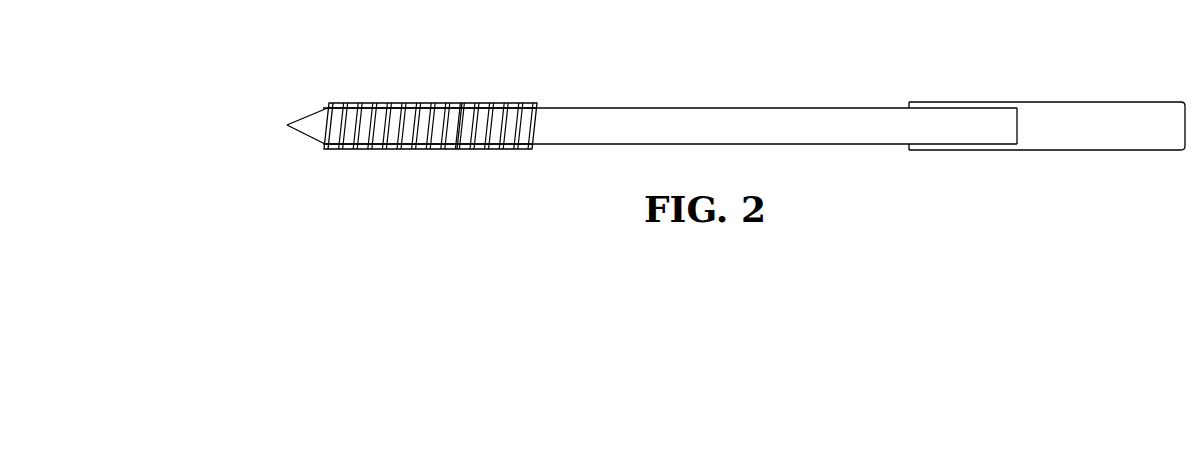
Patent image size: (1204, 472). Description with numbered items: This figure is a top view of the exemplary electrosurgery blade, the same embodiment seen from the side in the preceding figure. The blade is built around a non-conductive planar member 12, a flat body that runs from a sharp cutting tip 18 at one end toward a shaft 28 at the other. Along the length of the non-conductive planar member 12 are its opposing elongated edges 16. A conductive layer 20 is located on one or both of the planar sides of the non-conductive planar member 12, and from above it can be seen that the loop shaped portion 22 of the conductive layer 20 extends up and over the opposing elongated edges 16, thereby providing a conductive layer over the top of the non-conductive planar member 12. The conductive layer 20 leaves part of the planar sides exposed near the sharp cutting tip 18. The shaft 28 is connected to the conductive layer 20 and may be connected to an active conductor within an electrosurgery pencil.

The non-conductive planar member 12 is at (617, 125).
The opposing elongated edges 16 is at (683, 139).
The sharp cutting tip 18 is at (283, 125).
The conductive layer 20 is at (375, 122).
The loop shaped portion 22 is at (462, 102).
The shaft 28 is at (1107, 122).